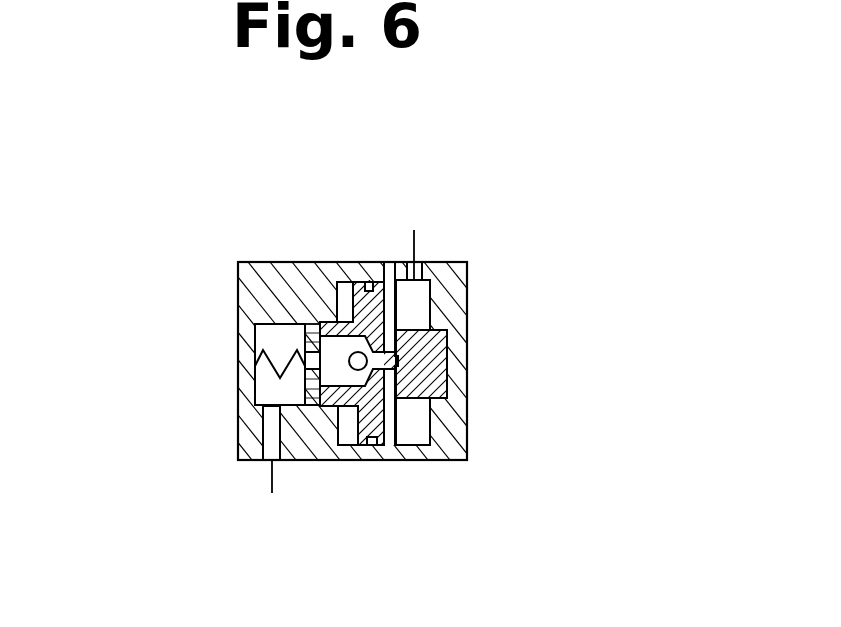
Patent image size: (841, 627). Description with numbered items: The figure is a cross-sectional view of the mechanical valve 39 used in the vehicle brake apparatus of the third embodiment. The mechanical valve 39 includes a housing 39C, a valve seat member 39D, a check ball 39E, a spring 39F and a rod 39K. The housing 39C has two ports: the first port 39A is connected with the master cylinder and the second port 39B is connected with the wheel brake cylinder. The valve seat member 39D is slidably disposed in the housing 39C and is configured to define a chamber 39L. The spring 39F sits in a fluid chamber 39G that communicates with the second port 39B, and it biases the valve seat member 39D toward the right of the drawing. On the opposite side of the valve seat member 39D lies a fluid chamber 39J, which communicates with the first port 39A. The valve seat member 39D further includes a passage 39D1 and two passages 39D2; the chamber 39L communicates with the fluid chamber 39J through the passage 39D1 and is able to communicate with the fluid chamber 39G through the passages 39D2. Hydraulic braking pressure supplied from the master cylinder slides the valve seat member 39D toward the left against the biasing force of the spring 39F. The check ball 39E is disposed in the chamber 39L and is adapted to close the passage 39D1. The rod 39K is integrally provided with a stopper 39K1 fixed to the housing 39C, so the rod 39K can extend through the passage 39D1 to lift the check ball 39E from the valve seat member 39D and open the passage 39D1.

The mechanical valve 39 is at (337, 331).
The first port 39A is at (418, 268).
The second port 39B is at (272, 448).
The housing 39C is at (245, 300).
The valve seat member 39D is at (376, 428).
The passage 39D1 is at (360, 353).
The passages 39D2 is at (302, 345).
The check ball 39E is at (350, 358).
The spring 39F is at (305, 382).
The fluid chamber 39G is at (267, 335).
The fluid chamber 39J is at (415, 305).
The rod 39K is at (400, 362).
The stopper 39K1 is at (433, 385).
The chamber 39L is at (338, 382).